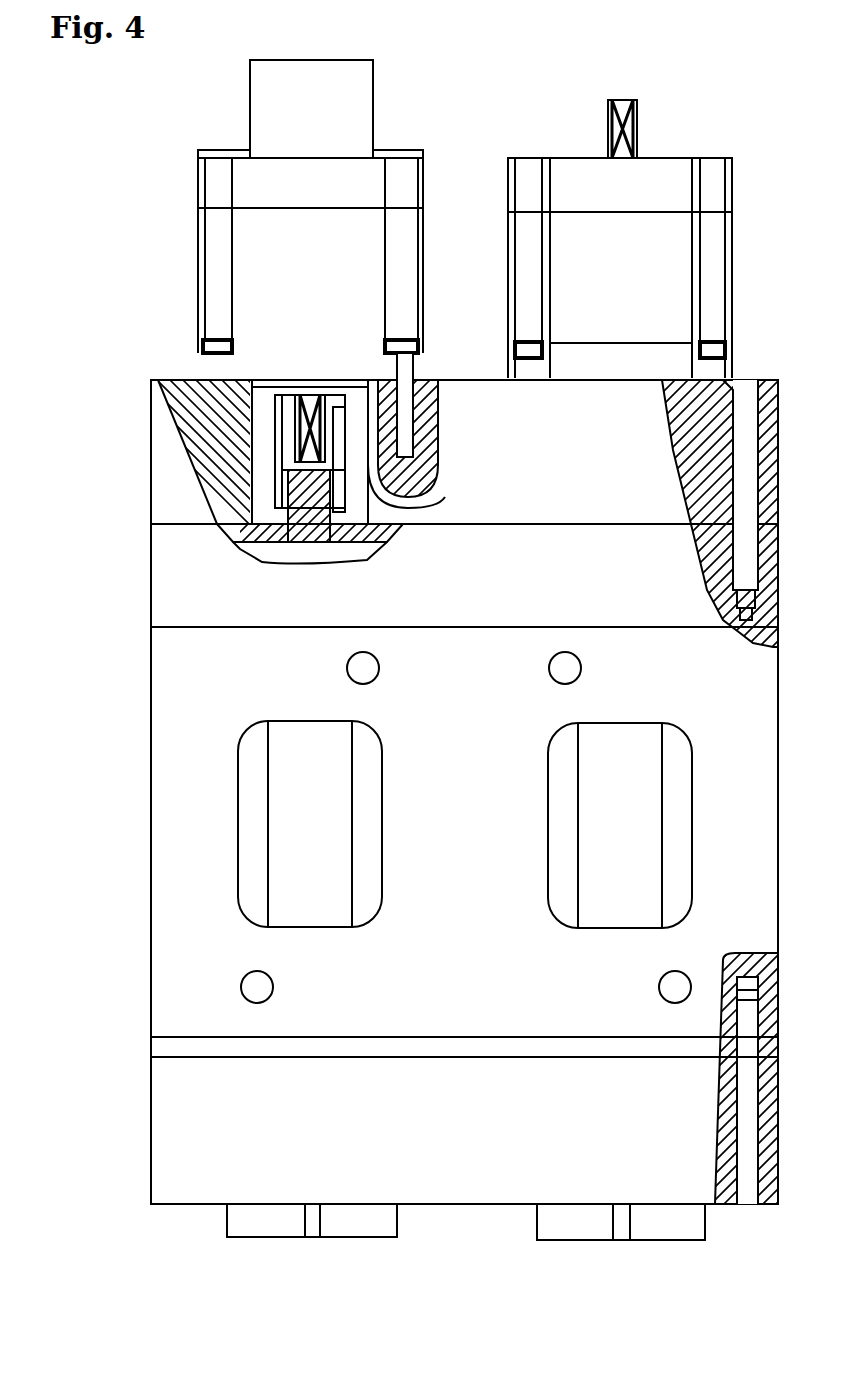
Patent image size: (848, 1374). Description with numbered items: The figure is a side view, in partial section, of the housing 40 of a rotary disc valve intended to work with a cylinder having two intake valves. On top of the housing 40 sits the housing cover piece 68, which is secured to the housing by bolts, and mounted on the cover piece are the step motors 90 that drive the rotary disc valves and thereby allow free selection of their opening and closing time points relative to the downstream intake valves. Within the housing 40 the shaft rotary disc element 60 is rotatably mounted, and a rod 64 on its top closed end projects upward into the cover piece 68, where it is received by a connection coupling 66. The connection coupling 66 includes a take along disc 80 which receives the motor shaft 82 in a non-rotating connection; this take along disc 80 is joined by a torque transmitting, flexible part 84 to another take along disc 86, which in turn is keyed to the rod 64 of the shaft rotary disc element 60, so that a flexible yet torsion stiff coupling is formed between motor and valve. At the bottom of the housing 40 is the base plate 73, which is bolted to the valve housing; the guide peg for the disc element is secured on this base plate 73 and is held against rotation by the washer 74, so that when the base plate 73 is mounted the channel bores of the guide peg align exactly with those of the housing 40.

The housing 40 is at (205, 672).
The shaft rotary disc element 60 is at (380, 547).
The rod 64 is at (280, 490).
The connection coupling 66 is at (278, 415).
The cover piece 68 is at (167, 483).
The base plate 73 is at (180, 1110).
The washer 74 is at (377, 1222).
The take along disc 80 is at (336, 414).
The motor shaft 82 is at (312, 388).
The flexible part 84 is at (178, 412).
The take along disc 86 is at (290, 470).
The step motors 90 is at (577, 180).